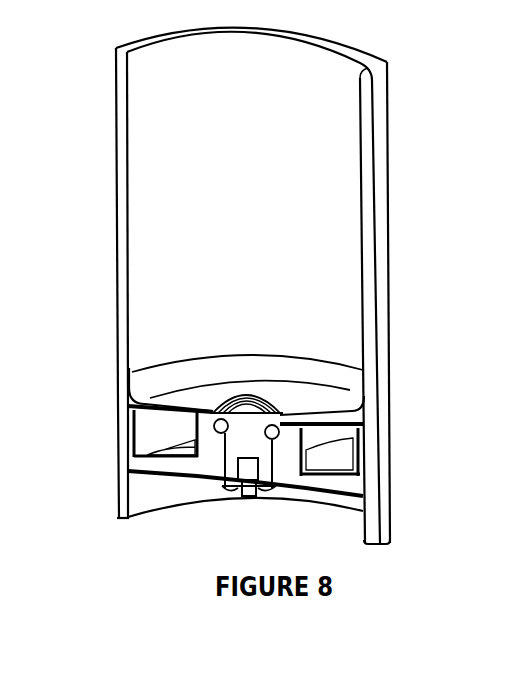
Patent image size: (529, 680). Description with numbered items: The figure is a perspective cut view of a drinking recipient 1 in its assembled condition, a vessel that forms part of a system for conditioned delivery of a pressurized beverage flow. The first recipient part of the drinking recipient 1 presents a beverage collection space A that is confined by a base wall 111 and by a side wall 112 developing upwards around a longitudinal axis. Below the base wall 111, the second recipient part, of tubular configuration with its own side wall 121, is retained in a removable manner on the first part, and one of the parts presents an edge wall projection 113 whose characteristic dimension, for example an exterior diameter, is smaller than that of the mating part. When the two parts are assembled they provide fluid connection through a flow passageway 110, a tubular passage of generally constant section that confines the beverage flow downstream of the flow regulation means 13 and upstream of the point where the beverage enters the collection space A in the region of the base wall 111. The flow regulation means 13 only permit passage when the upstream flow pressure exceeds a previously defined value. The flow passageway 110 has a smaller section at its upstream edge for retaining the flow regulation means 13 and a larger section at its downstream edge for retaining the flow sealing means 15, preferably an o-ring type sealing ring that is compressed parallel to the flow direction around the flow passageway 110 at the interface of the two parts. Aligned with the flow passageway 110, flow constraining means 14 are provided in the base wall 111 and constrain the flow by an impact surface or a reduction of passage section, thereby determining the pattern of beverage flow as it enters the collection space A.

The drinking recipient 1 is at (224, 44).
The beverage collection space A is at (276, 310).
The side wall 112 is at (283, 295).
The edge wall projection 113 is at (120, 430).
The base wall 111 is at (203, 398).
The flow constraining means 14 is at (246, 390).
The flow sealing means 15 is at (283, 406).
The flow passageway 110 is at (241, 437).
The flow regulation means 13 is at (233, 490).
The side wall 121 is at (226, 475).